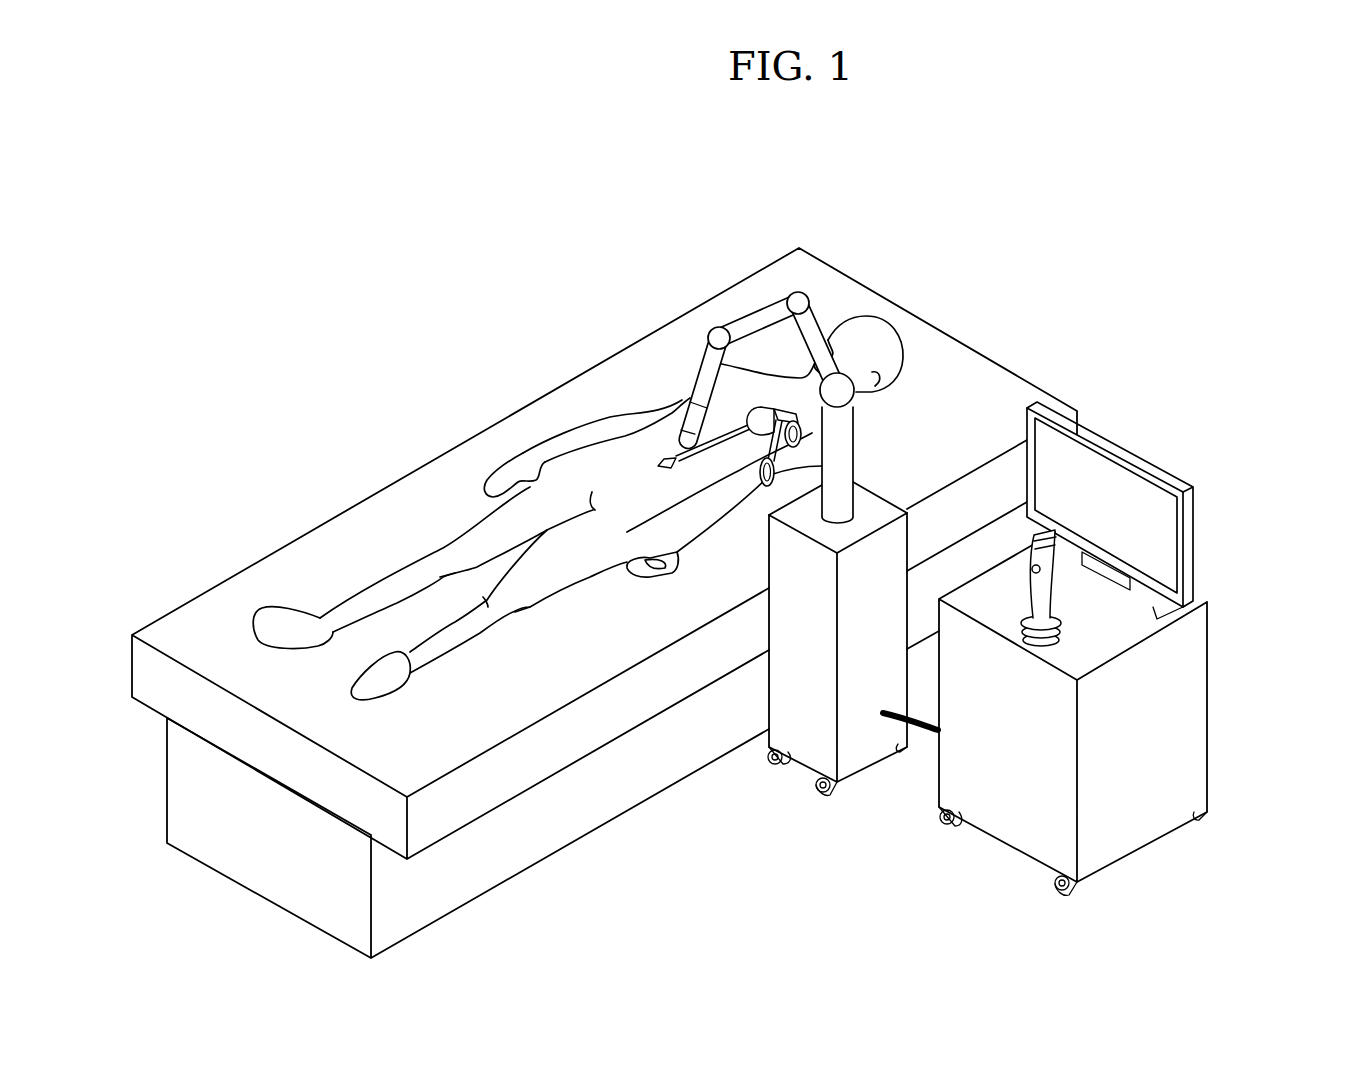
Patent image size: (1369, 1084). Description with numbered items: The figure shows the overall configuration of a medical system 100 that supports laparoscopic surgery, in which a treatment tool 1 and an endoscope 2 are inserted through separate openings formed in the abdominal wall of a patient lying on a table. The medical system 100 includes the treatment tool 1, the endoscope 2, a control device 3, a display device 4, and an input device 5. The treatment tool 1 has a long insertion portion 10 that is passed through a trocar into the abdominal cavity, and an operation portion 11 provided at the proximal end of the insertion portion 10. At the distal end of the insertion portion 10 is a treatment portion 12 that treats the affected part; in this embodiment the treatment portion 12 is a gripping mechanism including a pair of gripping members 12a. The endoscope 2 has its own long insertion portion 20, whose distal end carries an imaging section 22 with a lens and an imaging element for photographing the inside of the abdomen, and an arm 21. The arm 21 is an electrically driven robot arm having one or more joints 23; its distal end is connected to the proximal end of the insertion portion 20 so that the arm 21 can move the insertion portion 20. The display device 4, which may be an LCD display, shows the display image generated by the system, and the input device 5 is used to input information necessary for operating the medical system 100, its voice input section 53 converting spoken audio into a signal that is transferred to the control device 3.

The medical system 100 is at (977, 279).
The treatment tool 1 is at (641, 504).
The insertion portion 10 is at (687, 458).
The operation portion 11 is at (756, 533).
The treatment portion 12 is at (579, 496).
The gripping members 12a is at (662, 467).
The endoscope 2 is at (725, 350).
The insertion portion 20 is at (690, 418).
The arm 21 is at (769, 310).
The imaging section 22 is at (683, 440).
The joints 23 is at (691, 357).
The control device 3 is at (818, 752).
The display device 4 is at (1155, 490).
The input device 5 is at (1065, 592).
The voice input section 53 is at (760, 446).